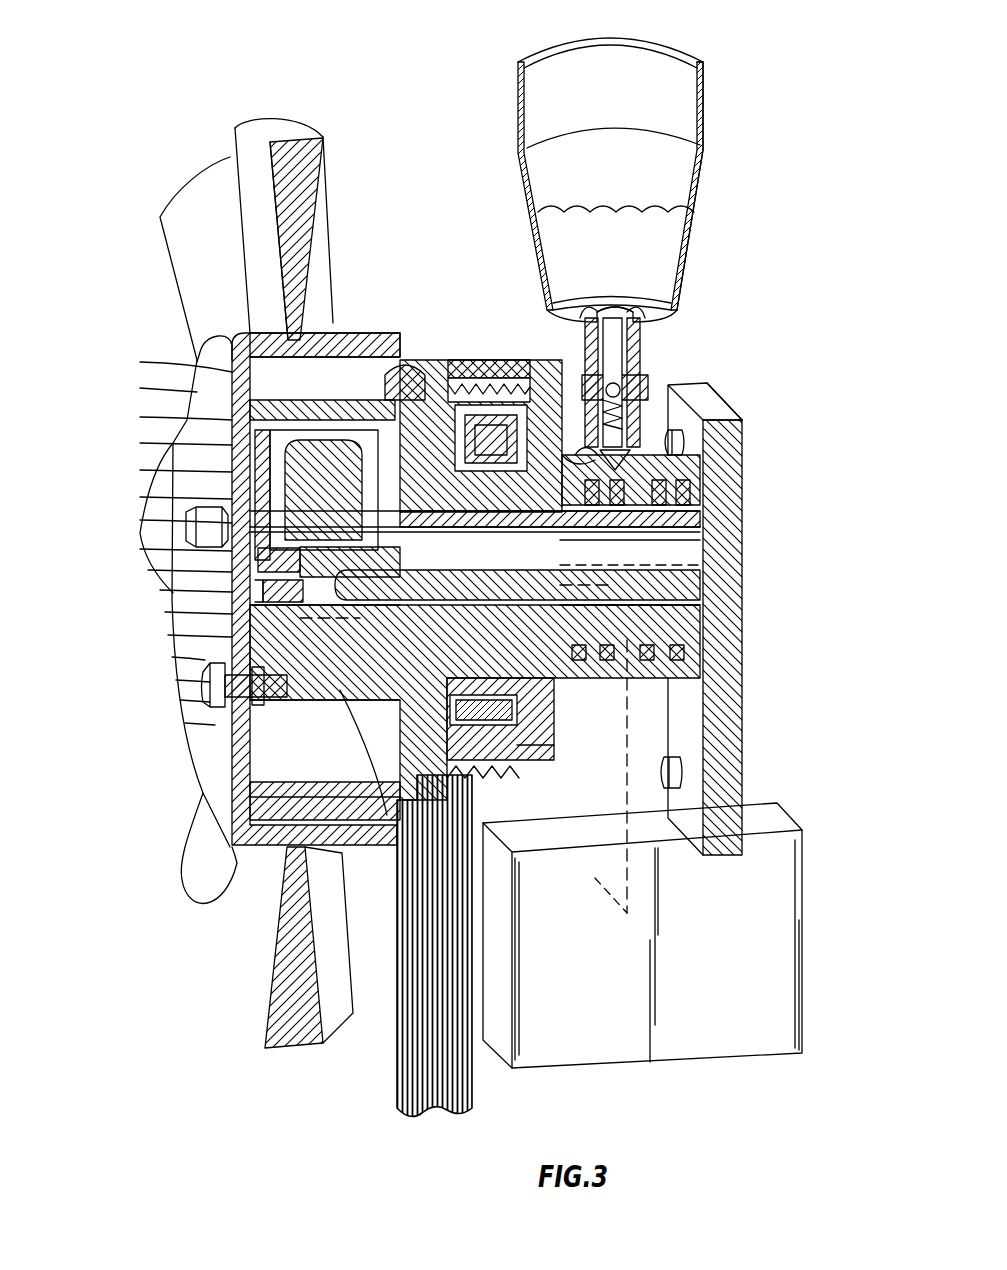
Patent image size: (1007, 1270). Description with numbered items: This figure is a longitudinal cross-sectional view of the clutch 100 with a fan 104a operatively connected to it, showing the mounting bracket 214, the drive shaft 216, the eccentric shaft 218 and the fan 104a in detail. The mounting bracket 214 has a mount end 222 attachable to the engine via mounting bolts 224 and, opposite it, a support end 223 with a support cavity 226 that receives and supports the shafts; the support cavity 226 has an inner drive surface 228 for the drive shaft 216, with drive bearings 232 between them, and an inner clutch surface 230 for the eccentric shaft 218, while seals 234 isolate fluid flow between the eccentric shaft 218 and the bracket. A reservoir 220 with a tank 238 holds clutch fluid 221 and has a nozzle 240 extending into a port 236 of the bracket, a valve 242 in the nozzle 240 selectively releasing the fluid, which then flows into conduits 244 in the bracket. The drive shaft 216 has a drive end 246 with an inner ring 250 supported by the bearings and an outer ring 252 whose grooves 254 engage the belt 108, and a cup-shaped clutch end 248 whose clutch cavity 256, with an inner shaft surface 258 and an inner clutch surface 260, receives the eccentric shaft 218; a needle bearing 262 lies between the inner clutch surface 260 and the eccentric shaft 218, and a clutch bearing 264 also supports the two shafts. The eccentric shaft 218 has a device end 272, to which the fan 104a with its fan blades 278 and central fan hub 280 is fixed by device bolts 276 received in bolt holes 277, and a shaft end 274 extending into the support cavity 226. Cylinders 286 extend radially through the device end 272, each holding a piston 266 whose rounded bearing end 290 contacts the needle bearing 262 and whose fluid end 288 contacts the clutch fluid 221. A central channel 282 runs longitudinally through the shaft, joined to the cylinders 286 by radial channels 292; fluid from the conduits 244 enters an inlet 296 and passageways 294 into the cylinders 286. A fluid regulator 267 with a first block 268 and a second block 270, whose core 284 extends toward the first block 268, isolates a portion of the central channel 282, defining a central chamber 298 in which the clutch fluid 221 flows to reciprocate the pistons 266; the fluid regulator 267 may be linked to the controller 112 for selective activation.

The clutch 100 is at (809, 58).
The fan 104a is at (192, 405).
The belt 108 is at (397, 1080).
The controller 112 is at (738, 1056).
The mounting bracket 214 is at (745, 787).
The drive shaft 216 is at (400, 365).
The eccentric shaft 218 is at (258, 628).
The reservoir 220 is at (695, 50).
The clutch fluid 221 is at (680, 207).
The mount end 222 is at (705, 415).
The support end 223 is at (555, 708).
The mounting bolts 224 is at (684, 438).
The support cavity 226 is at (557, 545).
The inner drive surface 228 is at (510, 772).
The inner clutch surface 230 is at (590, 672).
The drive bearings 232 is at (505, 726).
The seals 234 is at (645, 505).
The port 236 is at (672, 455).
The tank 238 is at (712, 90).
The nozzle 240 is at (645, 382).
The valve 242 is at (622, 390).
The conduits 244 is at (640, 482).
The drive end 246 is at (532, 335).
The clutch end 248 is at (330, 405).
The inner ring 250 is at (512, 540).
The outer ring 252 is at (500, 490).
The grooves 254 is at (500, 380).
The clutch cavity 256 is at (382, 395).
The inner shaft surface 258 is at (442, 510).
The inner clutch surface 260 is at (442, 372).
The needle bearing 262 is at (262, 870).
The clutch bearing 264 is at (445, 740).
The pistons 266 is at (285, 452).
The fluid regulator 267 is at (345, 712).
The first block 268 is at (258, 607).
The second block 270 is at (670, 545).
The device end 272 is at (270, 478).
The shaft end 274 is at (682, 627).
The device bolts 276 is at (186, 527).
The bolt holes 277 is at (240, 705).
The fan blades 278 is at (212, 160).
The fan hub 280 is at (197, 378).
The central channel 282 is at (290, 598).
The core 284 is at (662, 592).
The cylinders 286 is at (258, 500).
The fluid end 288 is at (262, 560).
The bearing end 290 is at (330, 418).
The radial channels 292 is at (300, 588).
The passageway 294 is at (665, 540).
The inlet 296 is at (682, 522).
The central chamber 298 is at (262, 622).